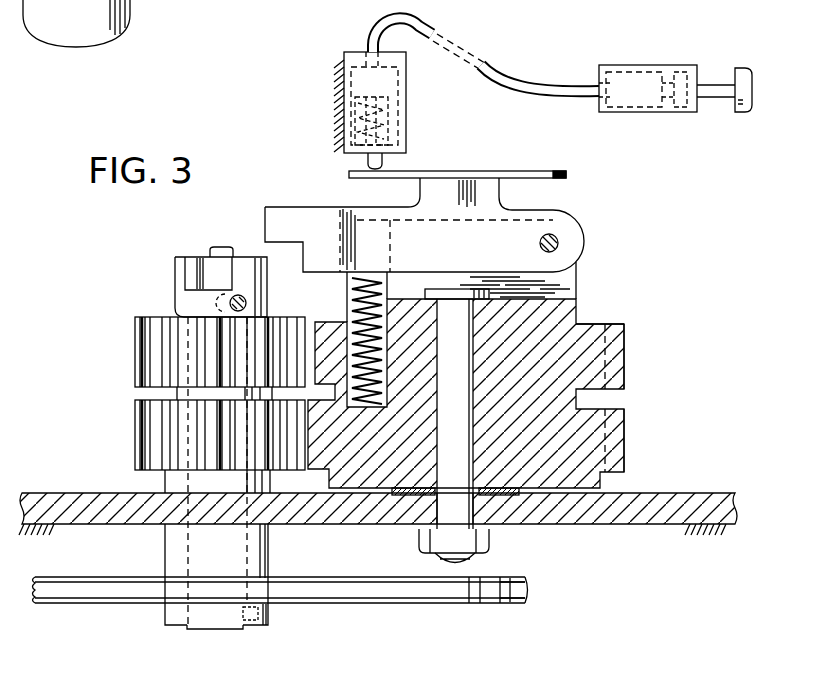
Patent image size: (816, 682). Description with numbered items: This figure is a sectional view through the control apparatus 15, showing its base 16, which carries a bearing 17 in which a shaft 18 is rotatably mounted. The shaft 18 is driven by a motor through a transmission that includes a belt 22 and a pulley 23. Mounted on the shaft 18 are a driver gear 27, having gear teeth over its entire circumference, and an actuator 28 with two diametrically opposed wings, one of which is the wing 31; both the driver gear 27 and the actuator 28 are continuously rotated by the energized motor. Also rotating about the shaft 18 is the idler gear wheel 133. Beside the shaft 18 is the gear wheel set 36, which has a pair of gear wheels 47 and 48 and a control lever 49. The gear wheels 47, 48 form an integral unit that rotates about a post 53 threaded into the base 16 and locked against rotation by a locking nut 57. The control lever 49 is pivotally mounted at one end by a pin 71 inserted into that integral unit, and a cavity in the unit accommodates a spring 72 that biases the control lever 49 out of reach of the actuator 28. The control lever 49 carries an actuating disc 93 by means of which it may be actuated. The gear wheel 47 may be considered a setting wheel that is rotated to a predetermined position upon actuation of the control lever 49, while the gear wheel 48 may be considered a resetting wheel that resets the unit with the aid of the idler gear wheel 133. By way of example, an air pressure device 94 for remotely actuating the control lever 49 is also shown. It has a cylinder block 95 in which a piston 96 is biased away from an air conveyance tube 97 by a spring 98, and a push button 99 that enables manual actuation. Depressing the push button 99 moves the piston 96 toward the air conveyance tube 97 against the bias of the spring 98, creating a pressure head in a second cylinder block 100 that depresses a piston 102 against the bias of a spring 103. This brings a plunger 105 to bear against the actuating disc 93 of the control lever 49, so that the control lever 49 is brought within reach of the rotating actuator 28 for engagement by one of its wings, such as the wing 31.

The control apparatus 15 is at (624, 288).
The base 16 is at (630, 493).
The bearing 17 is at (268, 547).
The shaft 18 is at (214, 247).
The belt 22 is at (105, 583).
The pulley 23 is at (512, 580).
The driver gear 27 is at (137, 334).
The actuator 28 is at (168, 276).
The wing 31 is at (195, 258).
The gear wheel set 36 is at (641, 318).
The gear wheel 47 is at (626, 356).
The gear wheel 48 is at (626, 430).
The control lever 49 is at (288, 207).
The post 53 is at (474, 420).
The locking nut 57 is at (490, 546).
The pin 71 is at (555, 239).
The spring 72 is at (352, 298).
The actuating disc 93 is at (532, 171).
The air pressure device 94 is at (540, 70).
The cylinder block 95 is at (660, 66).
The piston 96 is at (680, 112).
The air conveyance tube 97 is at (595, 86).
The spring 98 is at (631, 112).
The push button 99 is at (738, 68).
The cylinder block 100 is at (406, 110).
The piston 102 is at (398, 80).
The spring 103 is at (345, 113).
The plunger 105 is at (368, 158).
The idler gear wheel 133 is at (136, 428).